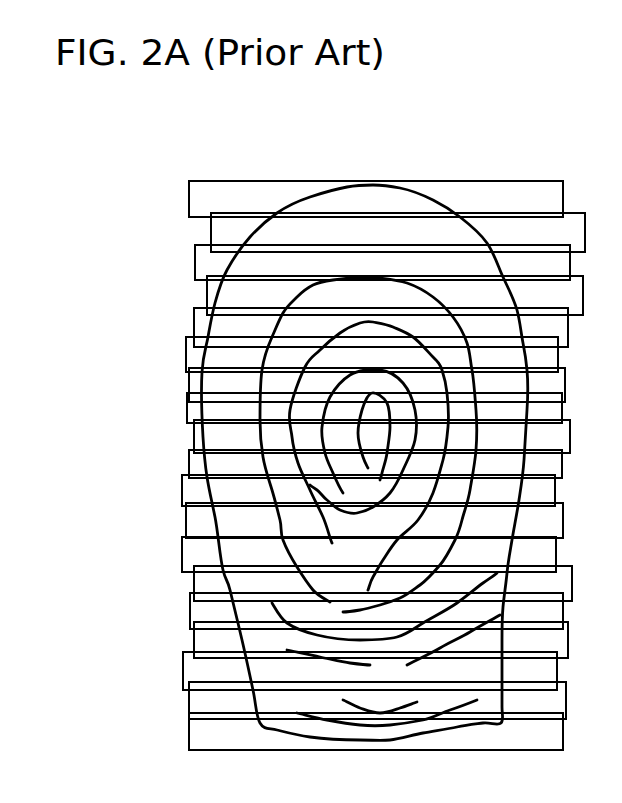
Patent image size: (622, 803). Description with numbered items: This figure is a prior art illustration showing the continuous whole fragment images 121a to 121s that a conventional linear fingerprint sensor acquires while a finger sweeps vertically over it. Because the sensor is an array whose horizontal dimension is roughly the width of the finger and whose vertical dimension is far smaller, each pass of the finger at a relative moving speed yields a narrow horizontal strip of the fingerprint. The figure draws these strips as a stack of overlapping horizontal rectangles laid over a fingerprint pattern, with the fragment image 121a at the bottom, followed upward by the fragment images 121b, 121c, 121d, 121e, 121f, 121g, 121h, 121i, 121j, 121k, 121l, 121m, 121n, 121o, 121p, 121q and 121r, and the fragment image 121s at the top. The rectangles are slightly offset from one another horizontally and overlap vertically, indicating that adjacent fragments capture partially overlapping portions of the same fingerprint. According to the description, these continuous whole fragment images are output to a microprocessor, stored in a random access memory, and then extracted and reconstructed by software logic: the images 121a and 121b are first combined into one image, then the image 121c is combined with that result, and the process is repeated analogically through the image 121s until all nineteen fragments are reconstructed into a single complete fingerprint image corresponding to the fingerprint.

The whole fragment image 121a is at (189, 730).
The whole fragment image 121b is at (189, 697).
The whole fragment image 121c is at (183, 667).
The whole fragment image 121d is at (194, 637).
The whole fragment image 121e is at (190, 607).
The whole fragment image 121f is at (194, 580).
The whole fragment image 121g is at (182, 552).
The whole fragment image 121h is at (186, 520).
The whole fragment image 121i is at (182, 490).
The whole fragment image 121j is at (189, 460).
The whole fragment image 121k is at (194, 437).
The whole fragment image 121l is at (187, 410).
The whole fragment image 121m is at (189, 383).
The whole fragment image 121n is at (186, 355).
The whole fragment image 121o is at (194, 322).
The whole fragment image 121p is at (207, 292).
The whole fragment image 121q is at (195, 265).
The whole fragment image 121r is at (211, 225).
The whole fragment image 121s is at (189, 195).